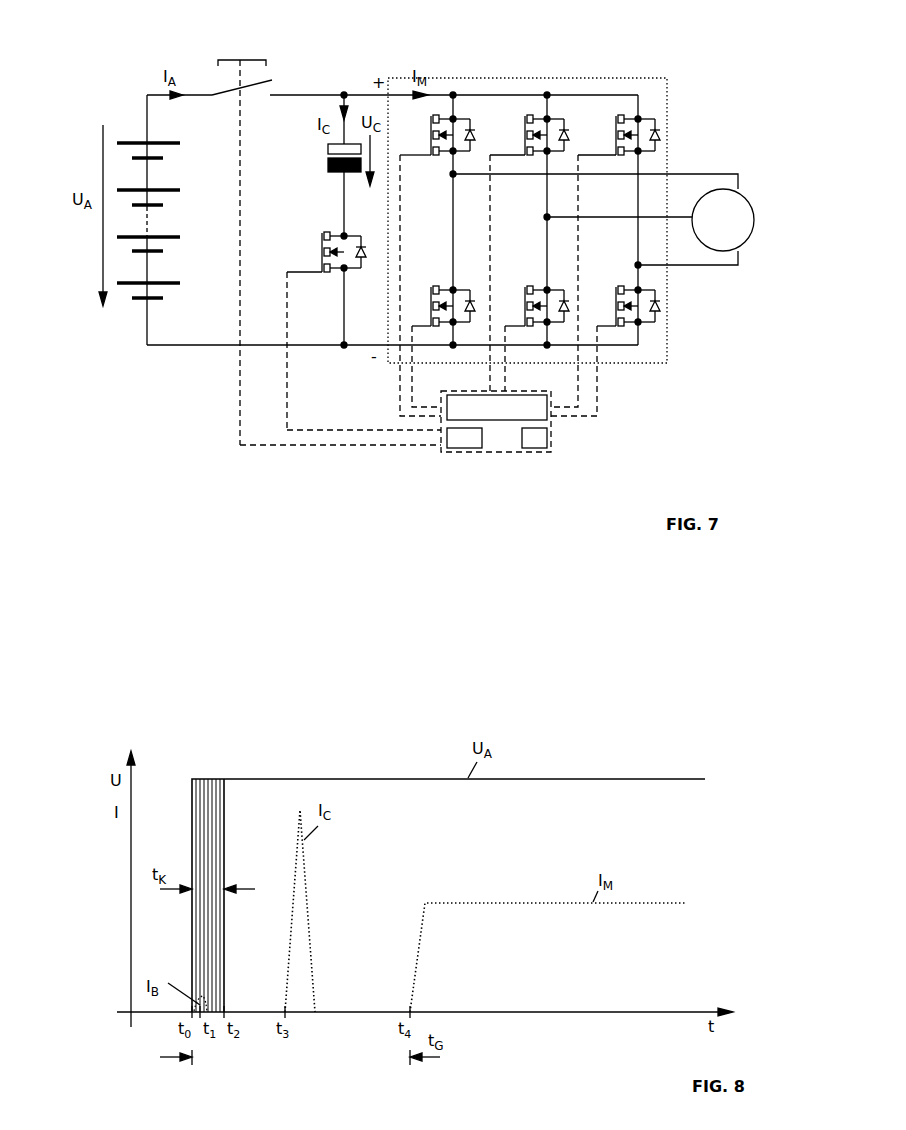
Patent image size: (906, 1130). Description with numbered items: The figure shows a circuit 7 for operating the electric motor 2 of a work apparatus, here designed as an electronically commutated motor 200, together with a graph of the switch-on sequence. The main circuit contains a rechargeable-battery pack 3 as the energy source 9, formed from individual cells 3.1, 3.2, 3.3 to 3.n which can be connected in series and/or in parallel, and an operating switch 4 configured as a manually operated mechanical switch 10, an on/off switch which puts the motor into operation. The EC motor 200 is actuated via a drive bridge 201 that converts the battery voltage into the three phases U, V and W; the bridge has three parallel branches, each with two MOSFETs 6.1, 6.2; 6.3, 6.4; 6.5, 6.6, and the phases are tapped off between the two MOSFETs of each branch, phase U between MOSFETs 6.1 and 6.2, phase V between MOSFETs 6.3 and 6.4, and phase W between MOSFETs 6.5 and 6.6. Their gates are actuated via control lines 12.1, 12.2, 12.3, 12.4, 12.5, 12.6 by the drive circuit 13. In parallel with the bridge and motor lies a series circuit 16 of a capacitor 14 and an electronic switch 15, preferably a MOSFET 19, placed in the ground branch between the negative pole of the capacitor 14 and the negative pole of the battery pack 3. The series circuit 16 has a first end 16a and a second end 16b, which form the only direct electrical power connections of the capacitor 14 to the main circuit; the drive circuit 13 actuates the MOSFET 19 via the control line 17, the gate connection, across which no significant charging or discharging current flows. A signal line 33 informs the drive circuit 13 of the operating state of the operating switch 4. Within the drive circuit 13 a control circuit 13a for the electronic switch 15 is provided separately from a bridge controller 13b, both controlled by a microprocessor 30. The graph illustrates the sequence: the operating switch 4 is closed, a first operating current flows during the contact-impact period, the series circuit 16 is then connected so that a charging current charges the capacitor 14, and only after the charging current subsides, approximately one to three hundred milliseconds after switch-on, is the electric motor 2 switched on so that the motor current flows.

The electric motor 2 is at (743, 233).
The rechargeable-battery pack 3 is at (154, 231).
The individual cell 3.1 is at (150, 291).
The individual cell 3.2 is at (150, 244).
The individual cell 3.3 is at (150, 198).
The individual cell 3.n is at (150, 152).
The operating switch 4 is at (213, 83).
The MOSFET 6.1 is at (472, 124).
The MOSFET 6.2 is at (446, 287).
The MOSFET 6.3 is at (566, 124).
The MOSFET 6.4 is at (540, 287).
The MOSFET 6.5 is at (657, 124).
The MOSFET 6.6 is at (630, 287).
The circuit 7 is at (130, 88).
The energy source 9 is at (128, 126).
The mechanical switch 10 is at (256, 58).
The control line 12.1 is at (398, 394).
The control line 12.2 is at (410, 377).
The control line 12.3 is at (489, 384).
The control line 12.4 is at (506, 388).
The control line 12.5 is at (580, 380).
The control line 12.6 is at (600, 404).
The drive circuit 13 is at (524, 447).
The control circuit 13a is at (466, 439).
The bridge controller 13b is at (537, 413).
The capacitor 14 is at (330, 148).
The electronic switch 15 is at (336, 225).
The series circuit 16 is at (342, 195).
The first end 16a is at (344, 95).
The second end 16b is at (341, 343).
The control line 17 is at (373, 433).
The MOSFET 19 is at (348, 255).
The microprocessor 30 is at (535, 439).
The signal line 33 is at (238, 400).
The electronically commutated motor 200 is at (753, 183).
The drive bridge 201 is at (578, 200).